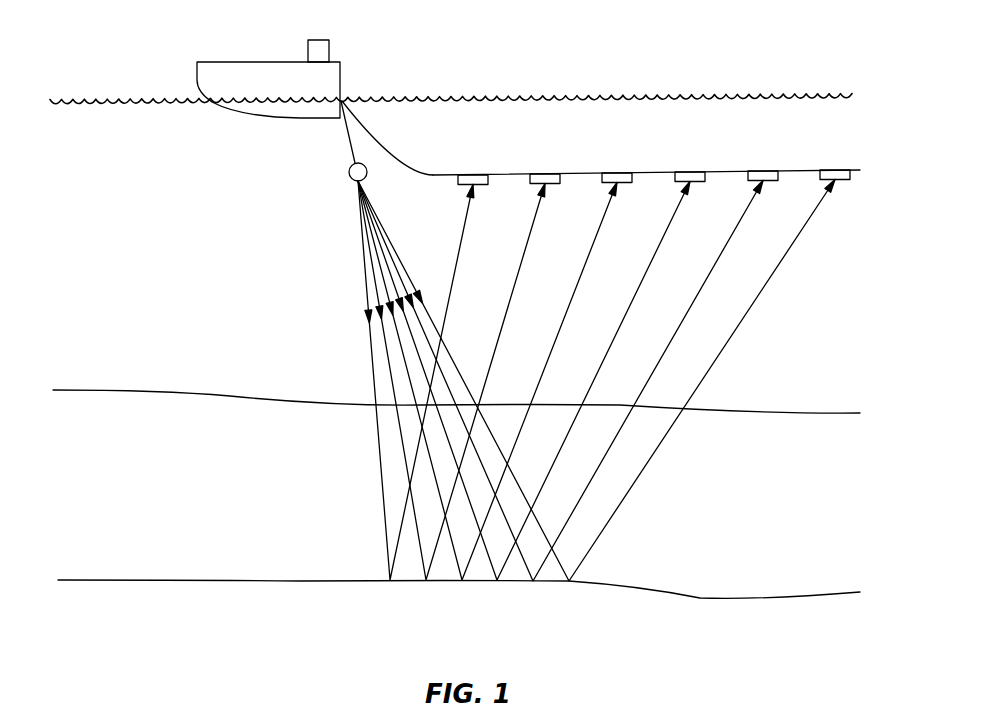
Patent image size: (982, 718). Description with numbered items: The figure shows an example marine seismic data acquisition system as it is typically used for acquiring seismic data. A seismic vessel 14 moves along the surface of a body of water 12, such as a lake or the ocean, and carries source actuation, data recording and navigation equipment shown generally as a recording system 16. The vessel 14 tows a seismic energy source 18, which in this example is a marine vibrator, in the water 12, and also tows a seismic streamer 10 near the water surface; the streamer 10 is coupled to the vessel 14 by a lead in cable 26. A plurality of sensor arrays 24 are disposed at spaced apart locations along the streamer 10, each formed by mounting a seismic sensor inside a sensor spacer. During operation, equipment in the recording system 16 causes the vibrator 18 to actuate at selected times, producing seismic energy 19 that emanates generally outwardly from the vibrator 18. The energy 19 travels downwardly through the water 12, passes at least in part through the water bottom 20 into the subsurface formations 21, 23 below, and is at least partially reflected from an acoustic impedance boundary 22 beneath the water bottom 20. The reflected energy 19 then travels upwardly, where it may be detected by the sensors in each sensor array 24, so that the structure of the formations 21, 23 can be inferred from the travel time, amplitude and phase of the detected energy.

The seismic streamer 10 is at (432, 181).
The body of water 12 is at (203, 233).
The seismic vessel 14 is at (260, 62).
The recording system 16 is at (318, 39).
The seismic energy source 18 is at (349, 170).
The seismic energy 19 is at (340, 237).
The water bottom 20 is at (124, 390).
The subsurface formation 21 is at (215, 488).
The acoustic impedance boundary 22 is at (130, 580).
The subsurface formation 23 is at (215, 638).
The sensor arrays 24 is at (470, 173).
The lead in cable 26 is at (388, 150).